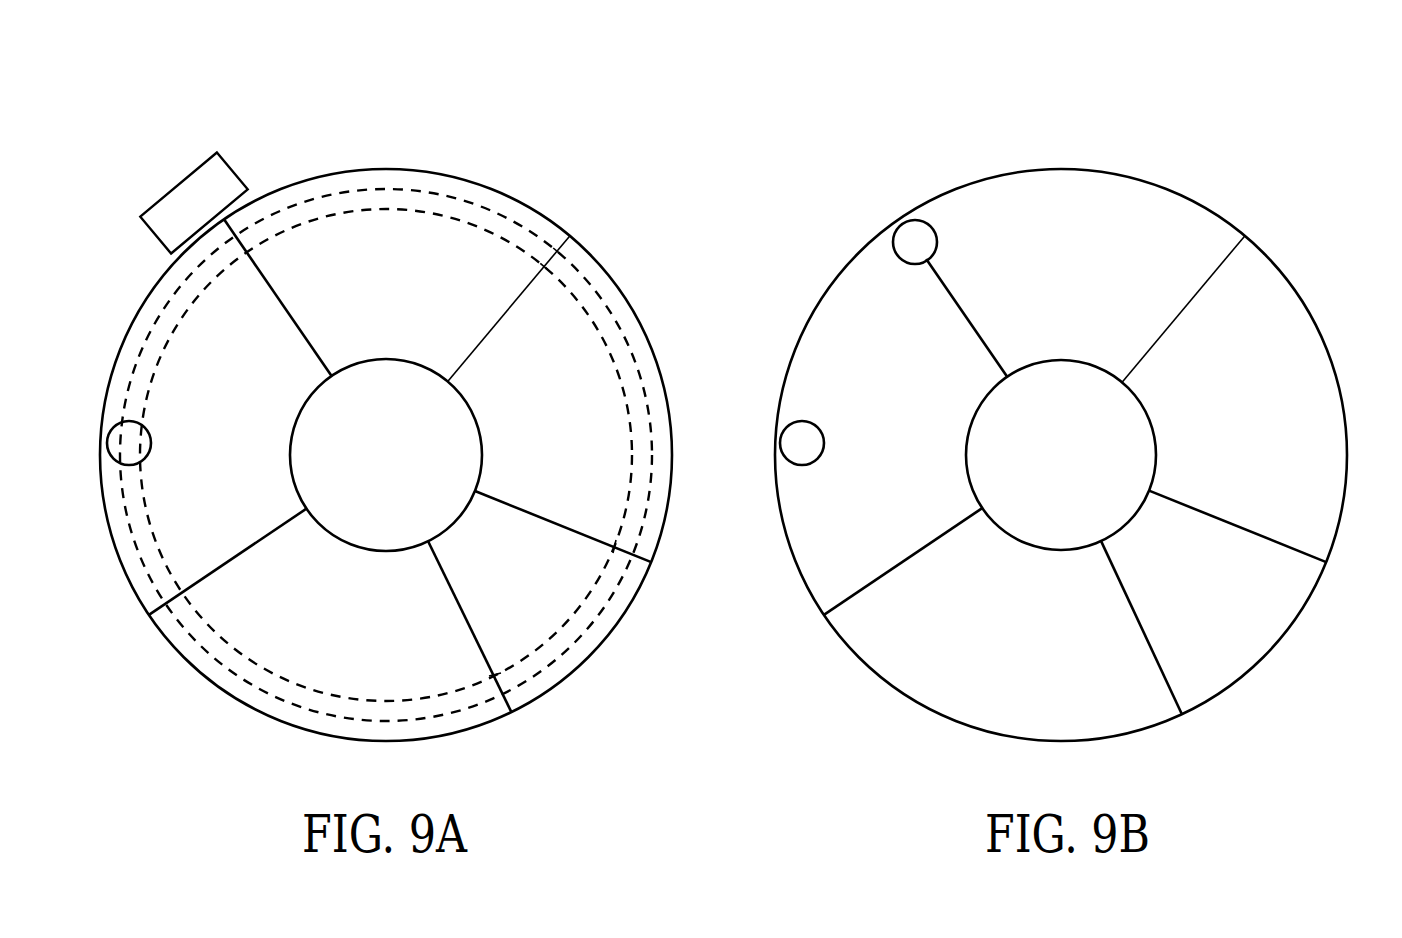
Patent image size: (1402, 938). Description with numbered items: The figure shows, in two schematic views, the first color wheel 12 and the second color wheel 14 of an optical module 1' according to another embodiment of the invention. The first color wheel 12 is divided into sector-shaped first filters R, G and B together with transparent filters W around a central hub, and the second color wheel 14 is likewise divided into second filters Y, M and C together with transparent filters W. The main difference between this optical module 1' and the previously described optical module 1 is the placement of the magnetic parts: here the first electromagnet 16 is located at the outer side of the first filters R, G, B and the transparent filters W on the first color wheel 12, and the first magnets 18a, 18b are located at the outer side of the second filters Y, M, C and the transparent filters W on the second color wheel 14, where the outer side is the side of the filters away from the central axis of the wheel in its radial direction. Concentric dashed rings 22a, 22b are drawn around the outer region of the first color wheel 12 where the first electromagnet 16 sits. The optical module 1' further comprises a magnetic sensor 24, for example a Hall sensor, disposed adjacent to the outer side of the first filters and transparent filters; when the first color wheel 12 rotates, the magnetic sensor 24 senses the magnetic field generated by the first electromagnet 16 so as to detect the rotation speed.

In FIG. 9A, the optical module 1' is at (405, 385).
In FIG. 9A, the first color wheel 12 is at (484, 161).
In FIG. 9A, the outer track 22a is at (520, 223).
In FIG. 9A, the inner track 22b is at (563, 283).
In FIG. 9A, the first electromagnet 16 is at (122, 442).
In FIG. 9A, the magnetic sensor 24 is at (193, 203).
In FIG. 9B, the optical module 1 is at (1057, 385).
In FIG. 9B, the second color wheel 14 is at (1162, 163).
In FIG. 9B, the first magnet 18a is at (802, 466).
In FIG. 9B, the first magnet 18b is at (894, 249).